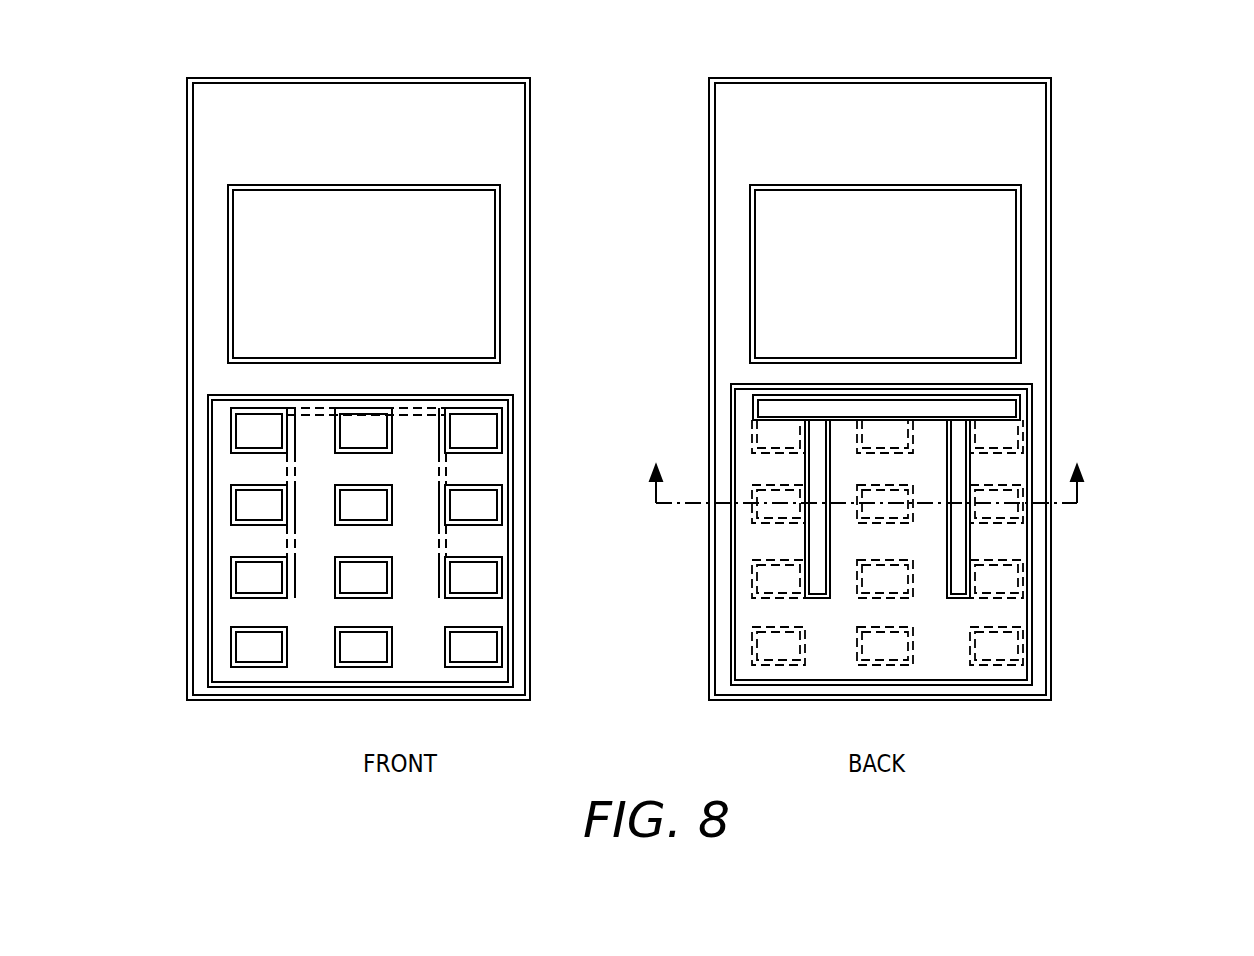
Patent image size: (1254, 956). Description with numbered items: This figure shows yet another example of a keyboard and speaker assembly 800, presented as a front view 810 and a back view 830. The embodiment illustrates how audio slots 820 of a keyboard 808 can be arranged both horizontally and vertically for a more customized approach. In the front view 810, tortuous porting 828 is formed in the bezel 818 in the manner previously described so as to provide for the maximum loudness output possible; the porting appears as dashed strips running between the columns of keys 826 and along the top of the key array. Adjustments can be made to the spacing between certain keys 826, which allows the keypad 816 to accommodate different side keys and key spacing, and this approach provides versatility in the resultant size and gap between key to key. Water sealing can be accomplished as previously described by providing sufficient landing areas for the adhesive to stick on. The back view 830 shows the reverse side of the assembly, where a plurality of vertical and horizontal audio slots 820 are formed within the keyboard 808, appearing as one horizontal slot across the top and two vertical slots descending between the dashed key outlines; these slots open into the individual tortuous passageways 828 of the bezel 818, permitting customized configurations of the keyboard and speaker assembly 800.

The keyboard and speaker assembly 800 is at (1208, 732).
The keyboard 808 is at (1003, 613).
The view 810 is at (523, 60).
The keypad 816 is at (227, 468).
The bezel 818 is at (208, 430).
The audio slots 820 is at (815, 480).
The keys 826 is at (247, 506).
The tortuous porting 828 is at (290, 525).
The view 830 is at (1045, 60).